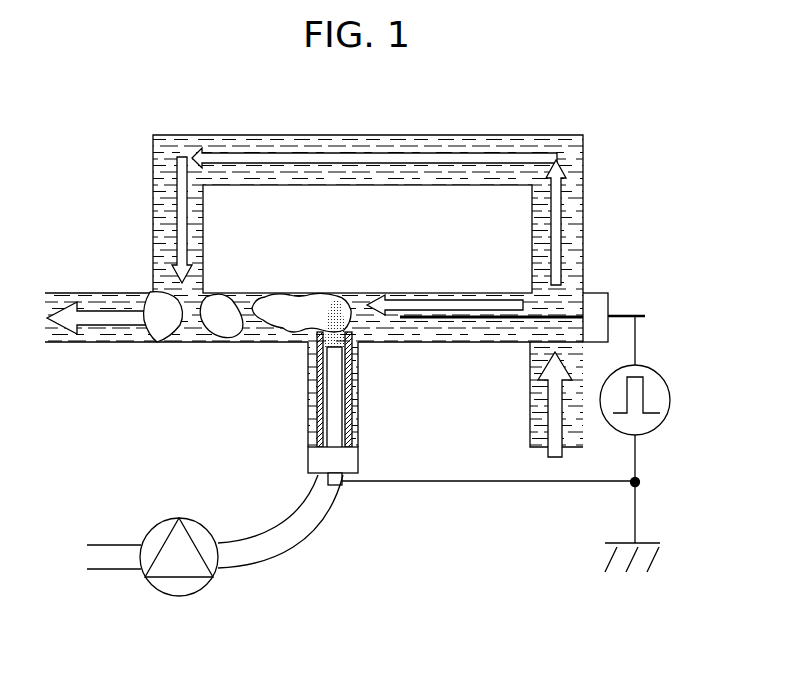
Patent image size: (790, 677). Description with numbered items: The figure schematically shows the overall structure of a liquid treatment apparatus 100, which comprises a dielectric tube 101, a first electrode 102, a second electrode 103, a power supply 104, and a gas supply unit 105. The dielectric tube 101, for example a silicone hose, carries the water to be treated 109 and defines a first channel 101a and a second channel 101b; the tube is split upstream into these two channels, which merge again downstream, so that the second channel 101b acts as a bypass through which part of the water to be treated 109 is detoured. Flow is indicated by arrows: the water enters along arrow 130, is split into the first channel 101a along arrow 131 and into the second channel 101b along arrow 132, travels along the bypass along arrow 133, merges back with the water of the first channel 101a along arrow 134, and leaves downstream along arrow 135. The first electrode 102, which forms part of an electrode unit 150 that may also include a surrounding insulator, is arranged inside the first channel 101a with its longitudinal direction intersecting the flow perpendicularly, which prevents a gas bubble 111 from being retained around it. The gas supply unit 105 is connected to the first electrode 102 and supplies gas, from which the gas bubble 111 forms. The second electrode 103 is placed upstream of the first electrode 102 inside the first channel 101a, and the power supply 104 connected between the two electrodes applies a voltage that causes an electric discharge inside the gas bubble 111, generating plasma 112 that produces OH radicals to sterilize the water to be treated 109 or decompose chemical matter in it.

The liquid treatment apparatus 100 is at (170, 103).
The dielectric tube 101 is at (127, 290).
The first channel 101a is at (258, 332).
The second channel 101b is at (452, 142).
The first electrode 102 is at (350, 461).
The second electrode 103 is at (625, 313).
The power supply 104 is at (671, 398).
The gas supply unit 105 is at (179, 597).
The water to be treated 109 is at (572, 225).
The gas bubble 111 is at (287, 306).
The plasma 112 is at (333, 313).
The arrow 130 is at (552, 415).
The arrow 131 is at (444, 300).
The arrow 132 is at (557, 193).
The arrow 133 is at (306, 152).
The arrow 134 is at (182, 185).
The arrow 135 is at (91, 318).
The electrode unit 150 is at (333, 486).